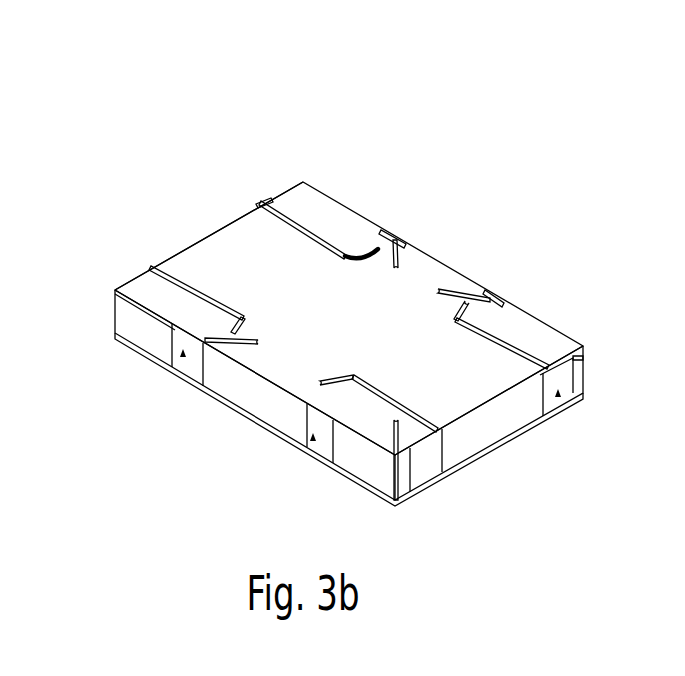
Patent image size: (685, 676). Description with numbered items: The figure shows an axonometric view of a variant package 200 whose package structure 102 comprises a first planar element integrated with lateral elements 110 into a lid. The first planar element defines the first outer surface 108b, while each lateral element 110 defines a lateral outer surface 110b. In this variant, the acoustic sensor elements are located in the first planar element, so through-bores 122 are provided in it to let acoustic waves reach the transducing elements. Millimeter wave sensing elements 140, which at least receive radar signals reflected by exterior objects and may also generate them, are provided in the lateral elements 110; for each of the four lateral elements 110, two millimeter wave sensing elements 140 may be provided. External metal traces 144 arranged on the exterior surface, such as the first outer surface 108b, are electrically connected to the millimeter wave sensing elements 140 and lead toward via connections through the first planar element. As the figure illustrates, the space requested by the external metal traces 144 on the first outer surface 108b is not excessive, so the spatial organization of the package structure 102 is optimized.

The package 200 is at (490, 148).
The first outer surface 108b is at (215, 253).
The external metal trace 144 is at (170, 266).
The through-bore 122 is at (172, 292).
The lateral element 110 is at (586, 350).
The package structure 102 is at (578, 362).
The lateral outer surface 110b is at (584, 388).
The millimeter wave sensing element 140 is at (182, 378).